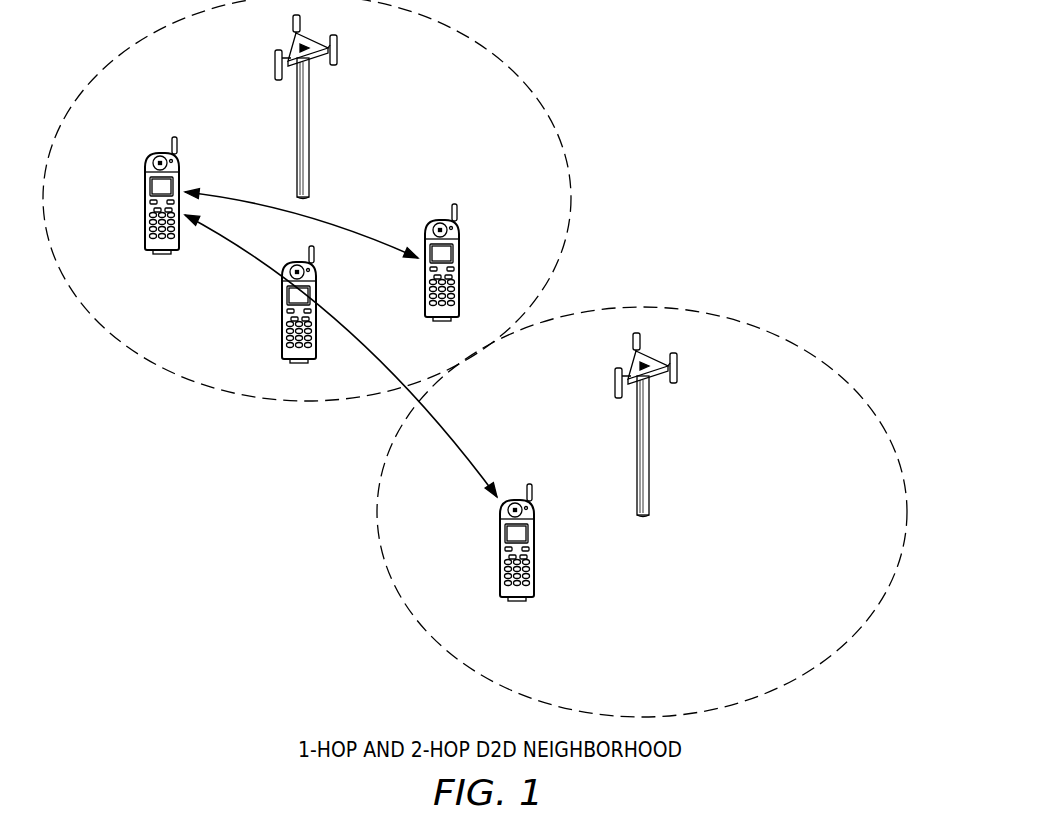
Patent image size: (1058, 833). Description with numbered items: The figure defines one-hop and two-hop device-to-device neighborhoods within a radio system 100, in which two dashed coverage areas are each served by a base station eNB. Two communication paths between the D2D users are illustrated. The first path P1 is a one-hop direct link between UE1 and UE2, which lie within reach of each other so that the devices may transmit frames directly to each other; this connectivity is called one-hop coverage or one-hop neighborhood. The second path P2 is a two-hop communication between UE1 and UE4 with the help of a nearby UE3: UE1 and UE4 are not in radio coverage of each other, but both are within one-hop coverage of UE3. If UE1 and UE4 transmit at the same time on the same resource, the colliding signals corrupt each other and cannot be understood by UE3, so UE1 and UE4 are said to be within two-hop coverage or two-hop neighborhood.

The 1-hop and 2-hop D2D neighborhood 100 is at (710, 103).
The evolved Node B base station eNB is at (488, 266).
The element UE1 is at (138, 195).
The element UE2 is at (466, 262).
The element UE3 is at (274, 304).
The element UE4 is at (541, 542).
The 1-hop D2D path P1 is at (301, 215).
The 2-hop D2D path P2 is at (341, 356).